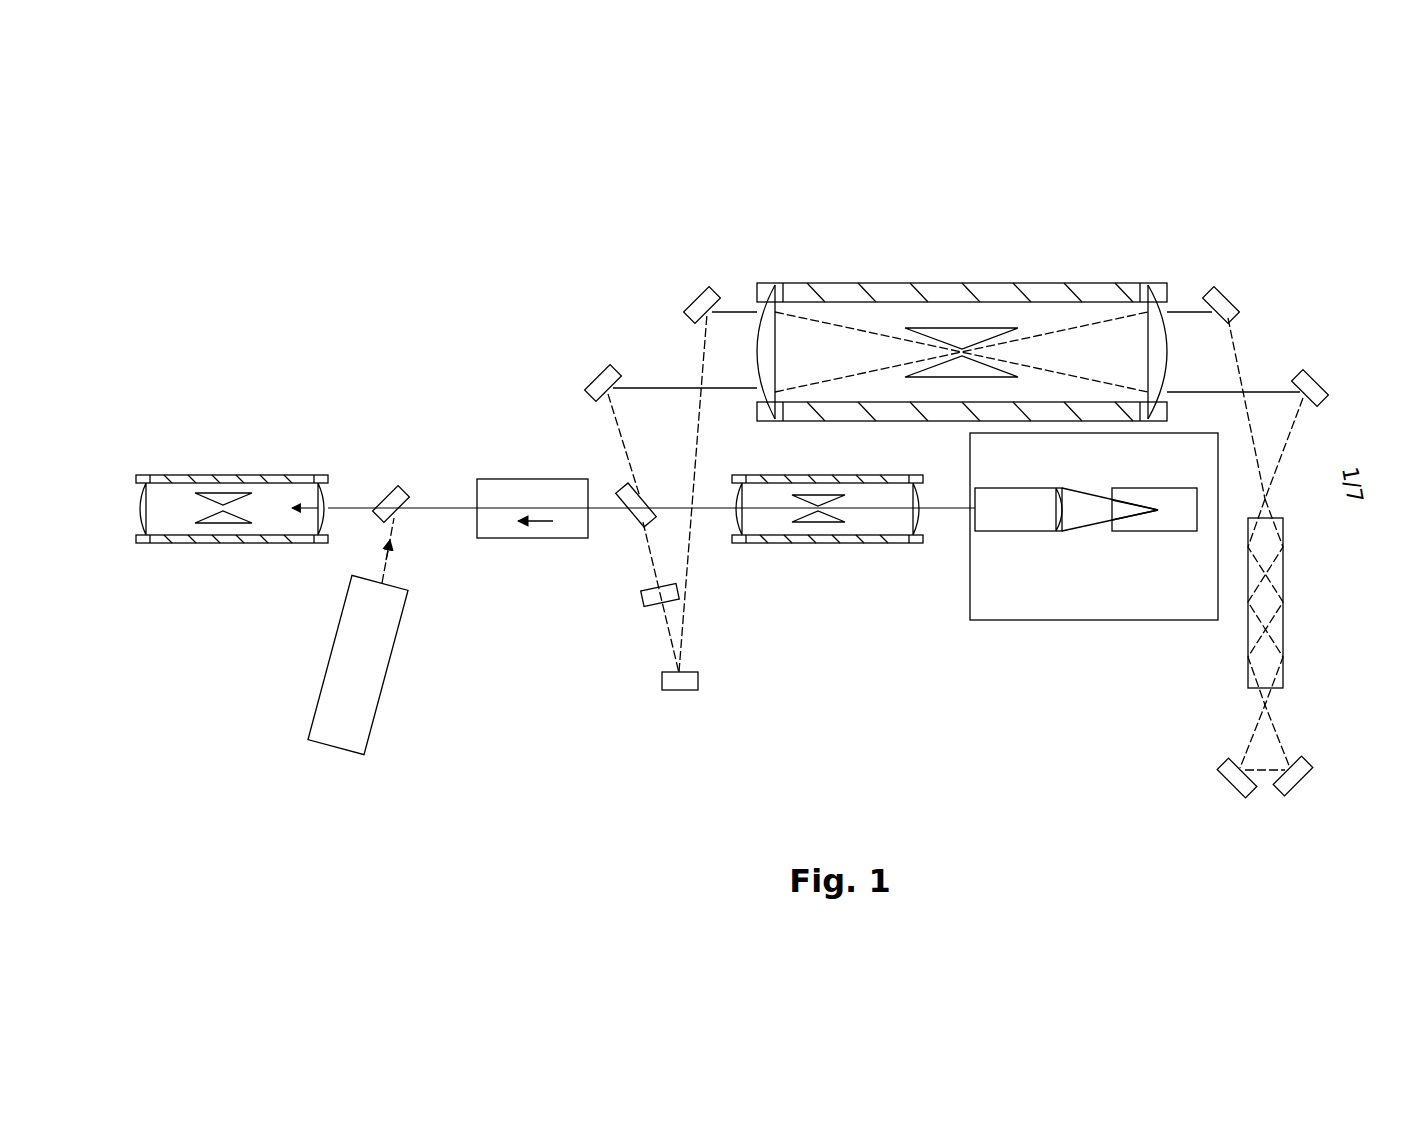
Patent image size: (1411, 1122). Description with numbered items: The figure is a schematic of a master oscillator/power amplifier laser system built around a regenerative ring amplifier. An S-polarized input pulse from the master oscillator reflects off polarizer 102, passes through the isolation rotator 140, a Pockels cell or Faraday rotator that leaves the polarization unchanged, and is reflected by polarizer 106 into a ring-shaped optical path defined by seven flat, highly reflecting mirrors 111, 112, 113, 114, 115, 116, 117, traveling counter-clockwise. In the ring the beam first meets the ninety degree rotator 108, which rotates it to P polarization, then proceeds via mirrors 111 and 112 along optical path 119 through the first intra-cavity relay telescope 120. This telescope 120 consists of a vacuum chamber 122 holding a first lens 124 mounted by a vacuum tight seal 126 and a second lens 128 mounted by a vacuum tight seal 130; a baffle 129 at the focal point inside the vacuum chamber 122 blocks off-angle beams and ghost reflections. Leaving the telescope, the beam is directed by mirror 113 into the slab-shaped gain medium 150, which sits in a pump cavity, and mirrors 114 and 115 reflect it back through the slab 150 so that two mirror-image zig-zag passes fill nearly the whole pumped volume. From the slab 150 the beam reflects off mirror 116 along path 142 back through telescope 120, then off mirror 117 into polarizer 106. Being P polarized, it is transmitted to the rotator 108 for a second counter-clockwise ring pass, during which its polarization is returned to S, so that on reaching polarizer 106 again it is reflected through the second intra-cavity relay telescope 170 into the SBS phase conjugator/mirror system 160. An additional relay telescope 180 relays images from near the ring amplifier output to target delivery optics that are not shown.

The first intra-cavity relay telescope 120 is at (982, 203).
The vacuum chamber 122 is at (922, 284).
The vacuum tight seal 126 is at (773, 284).
The first lens 124 is at (757, 343).
The vacuum tight seal 130 is at (1161, 284).
The second lens 128 is at (1148, 346).
The optical path 119 is at (853, 328).
The path 142 is at (1052, 330).
The baffle 129 is at (960, 378).
The mirror 112 is at (697, 293).
The mirror 117 is at (598, 372).
The mirror 116 is at (1232, 297).
The mirror 113 is at (1321, 378).
The slab-shaped gain medium 150 is at (1283, 570).
The mirror 115 is at (1227, 785).
The mirror 114 is at (1303, 785).
The SBS phase conjugator/mirror system 160 is at (1012, 622).
The second intra-cavity relay telescope 170 is at (840, 545).
The relay telescope 180 is at (258, 545).
The polarizer 102 is at (386, 489).
The rotator 140 is at (523, 478).
The polarizer 106 is at (627, 523).
The 90 degree rotator 108 is at (397, 650).
The mirror 111 is at (662, 688).